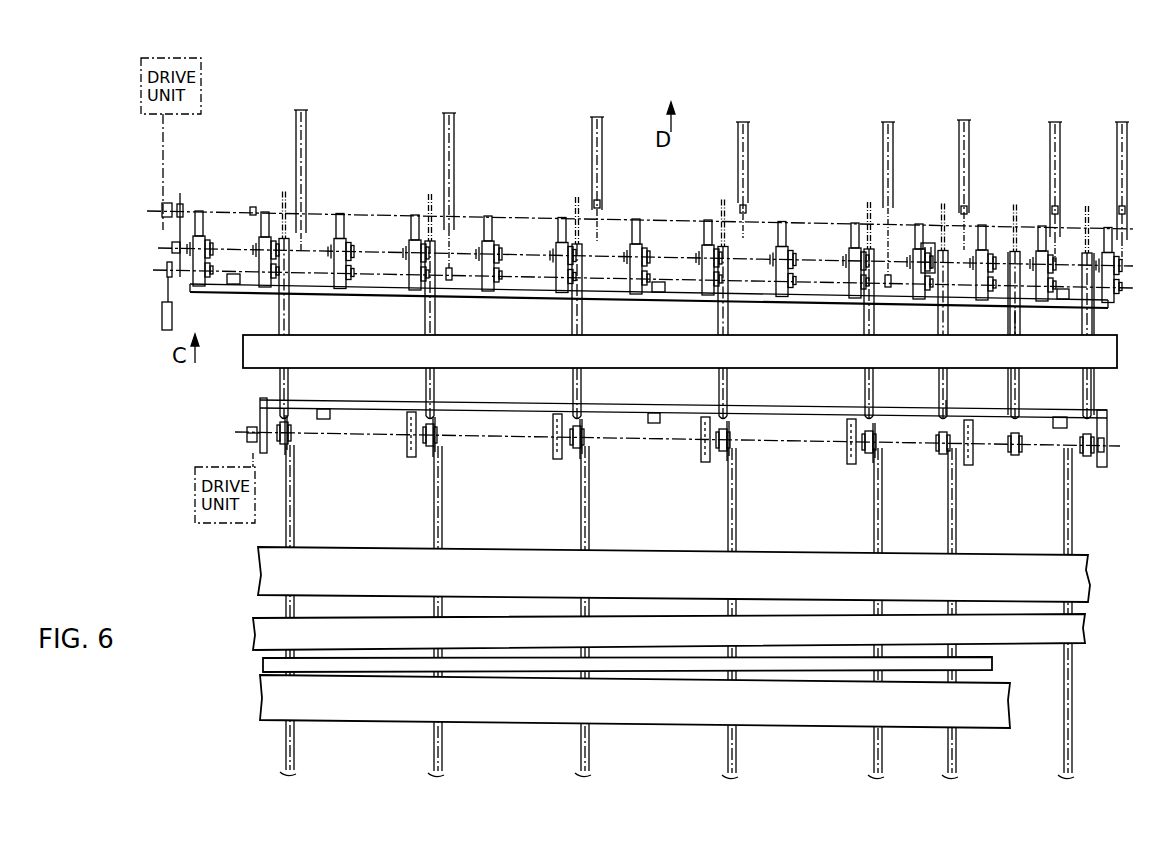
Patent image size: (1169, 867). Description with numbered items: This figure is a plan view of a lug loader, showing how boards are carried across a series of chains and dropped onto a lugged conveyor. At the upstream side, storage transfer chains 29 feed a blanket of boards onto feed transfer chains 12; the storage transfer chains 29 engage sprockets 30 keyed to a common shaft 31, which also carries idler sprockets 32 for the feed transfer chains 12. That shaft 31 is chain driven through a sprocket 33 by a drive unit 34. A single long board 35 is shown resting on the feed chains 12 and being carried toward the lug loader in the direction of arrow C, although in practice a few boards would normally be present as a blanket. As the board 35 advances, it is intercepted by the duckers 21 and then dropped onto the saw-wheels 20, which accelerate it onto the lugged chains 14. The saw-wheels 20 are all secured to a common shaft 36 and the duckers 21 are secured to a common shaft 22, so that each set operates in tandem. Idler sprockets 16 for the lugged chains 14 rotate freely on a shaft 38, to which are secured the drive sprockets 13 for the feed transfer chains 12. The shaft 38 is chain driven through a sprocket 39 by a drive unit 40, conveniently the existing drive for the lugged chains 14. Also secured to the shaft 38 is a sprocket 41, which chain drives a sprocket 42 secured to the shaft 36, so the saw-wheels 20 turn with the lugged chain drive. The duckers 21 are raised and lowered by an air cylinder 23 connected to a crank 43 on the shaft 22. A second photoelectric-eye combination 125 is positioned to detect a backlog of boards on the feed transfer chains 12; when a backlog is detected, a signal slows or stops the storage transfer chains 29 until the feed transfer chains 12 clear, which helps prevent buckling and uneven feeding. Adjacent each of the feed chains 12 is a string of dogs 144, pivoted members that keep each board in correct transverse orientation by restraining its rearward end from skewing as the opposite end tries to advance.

The feed transfer chains 12 is at (286, 385).
The drive sprockets 13 is at (286, 195).
The lugged chains 14 is at (452, 112).
The idler sprockets 16 is at (304, 212).
The saw-wheels 20 is at (212, 245).
The duckers 21 is at (208, 240).
The common shaft 22 is at (676, 295).
The air cylinder 23 is at (173, 316).
The storage transfer chains 29 is at (300, 533).
The sprockets 30 is at (297, 443).
The common shaft 31 is at (537, 437).
The idler sprockets 32 is at (283, 453).
The sprocket 33 is at (258, 420).
The drive unit 34 is at (195, 492).
The long board 35 is at (668, 366).
The common shaft 36 is at (538, 257).
The shaft 38 is at (255, 212).
The sprocket 39 is at (163, 207).
The drive unit 40 is at (203, 110).
The sprocket 41 is at (182, 195).
The sprocket 42 is at (172, 250).
The crank 43 is at (167, 275).
The second photoelectric-eye combination 125 is at (997, 387).
The string of dogs 144 is at (1086, 328).